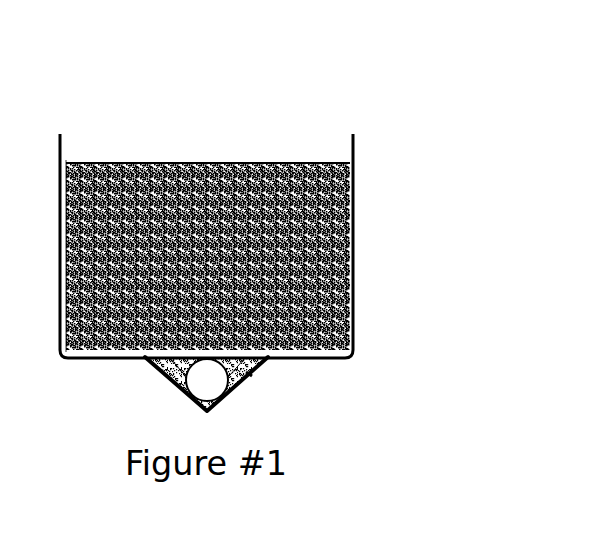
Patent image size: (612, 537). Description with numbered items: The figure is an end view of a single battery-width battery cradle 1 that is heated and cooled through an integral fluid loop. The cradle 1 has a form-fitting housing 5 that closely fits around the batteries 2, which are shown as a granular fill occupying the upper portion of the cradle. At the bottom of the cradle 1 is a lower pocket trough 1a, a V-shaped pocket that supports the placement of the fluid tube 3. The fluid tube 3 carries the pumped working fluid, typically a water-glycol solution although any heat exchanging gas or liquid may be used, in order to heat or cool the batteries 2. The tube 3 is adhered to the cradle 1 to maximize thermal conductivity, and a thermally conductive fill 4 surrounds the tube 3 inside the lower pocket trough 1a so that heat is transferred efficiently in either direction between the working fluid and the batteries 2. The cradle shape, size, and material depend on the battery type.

The battery cradle 1 is at (267, 68).
The lower pocket trough 1a is at (250, 374).
The batteries 2 is at (222, 178).
The fluid tube 3 is at (232, 383).
The thermally conductive fill 4 is at (158, 368).
The form-fitting housing 5 is at (65, 152).